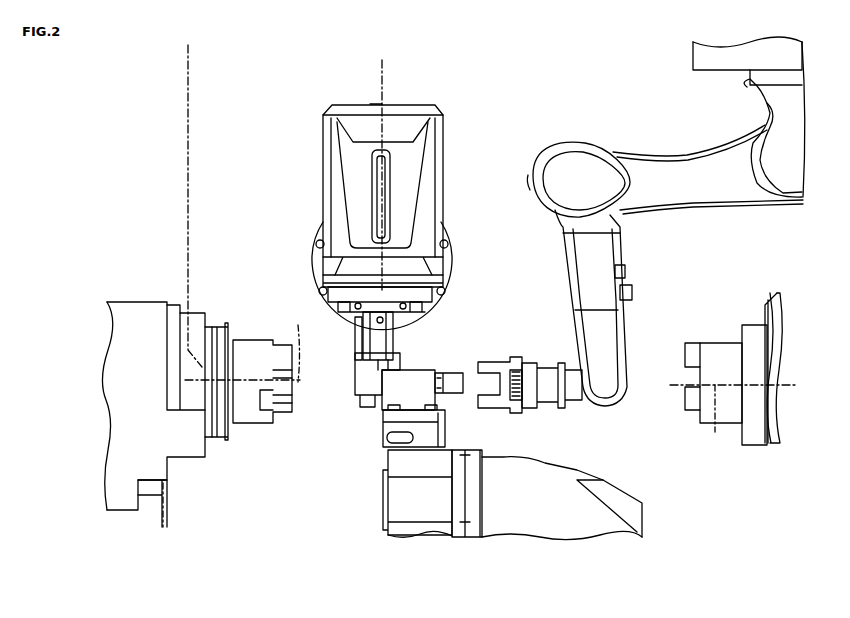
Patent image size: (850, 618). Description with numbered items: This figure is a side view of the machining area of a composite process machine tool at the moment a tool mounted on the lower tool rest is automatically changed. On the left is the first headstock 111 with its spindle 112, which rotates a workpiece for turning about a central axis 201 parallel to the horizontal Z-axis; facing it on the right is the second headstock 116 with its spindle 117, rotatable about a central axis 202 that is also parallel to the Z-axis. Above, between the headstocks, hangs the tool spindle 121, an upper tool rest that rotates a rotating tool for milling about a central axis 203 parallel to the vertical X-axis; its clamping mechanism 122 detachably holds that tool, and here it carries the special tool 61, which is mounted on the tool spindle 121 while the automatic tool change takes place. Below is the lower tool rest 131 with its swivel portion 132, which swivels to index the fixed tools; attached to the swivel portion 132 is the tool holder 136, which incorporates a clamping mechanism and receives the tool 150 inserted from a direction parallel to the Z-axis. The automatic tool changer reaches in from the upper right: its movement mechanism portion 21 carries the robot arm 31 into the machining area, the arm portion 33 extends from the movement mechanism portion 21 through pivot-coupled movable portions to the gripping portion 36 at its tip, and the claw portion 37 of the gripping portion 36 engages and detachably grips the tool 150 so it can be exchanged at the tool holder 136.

The movement mechanism portion 21 is at (718, 74).
The robot arm 31 is at (665, 242).
The arm portion 33 is at (607, 247).
The gripping portion 36 is at (520, 358).
The claw portion 37 is at (490, 406).
The special tool 61 is at (355, 366).
The first headstock 111 is at (140, 301).
The spindle 112 is at (250, 350).
The second headstock 116 is at (765, 448).
The spindle 117 is at (718, 352).
The tool spindle 121 is at (368, 199).
The clamping mechanism 122 is at (362, 213).
The lower tool rest 131 is at (556, 468).
The swivel portion 132 is at (400, 505).
The tool holder 136 is at (408, 403).
The tool 150 is at (452, 398).
The central axis 201 is at (300, 347).
The central axis 202 is at (716, 418).
The central axis 203 is at (373, 122).